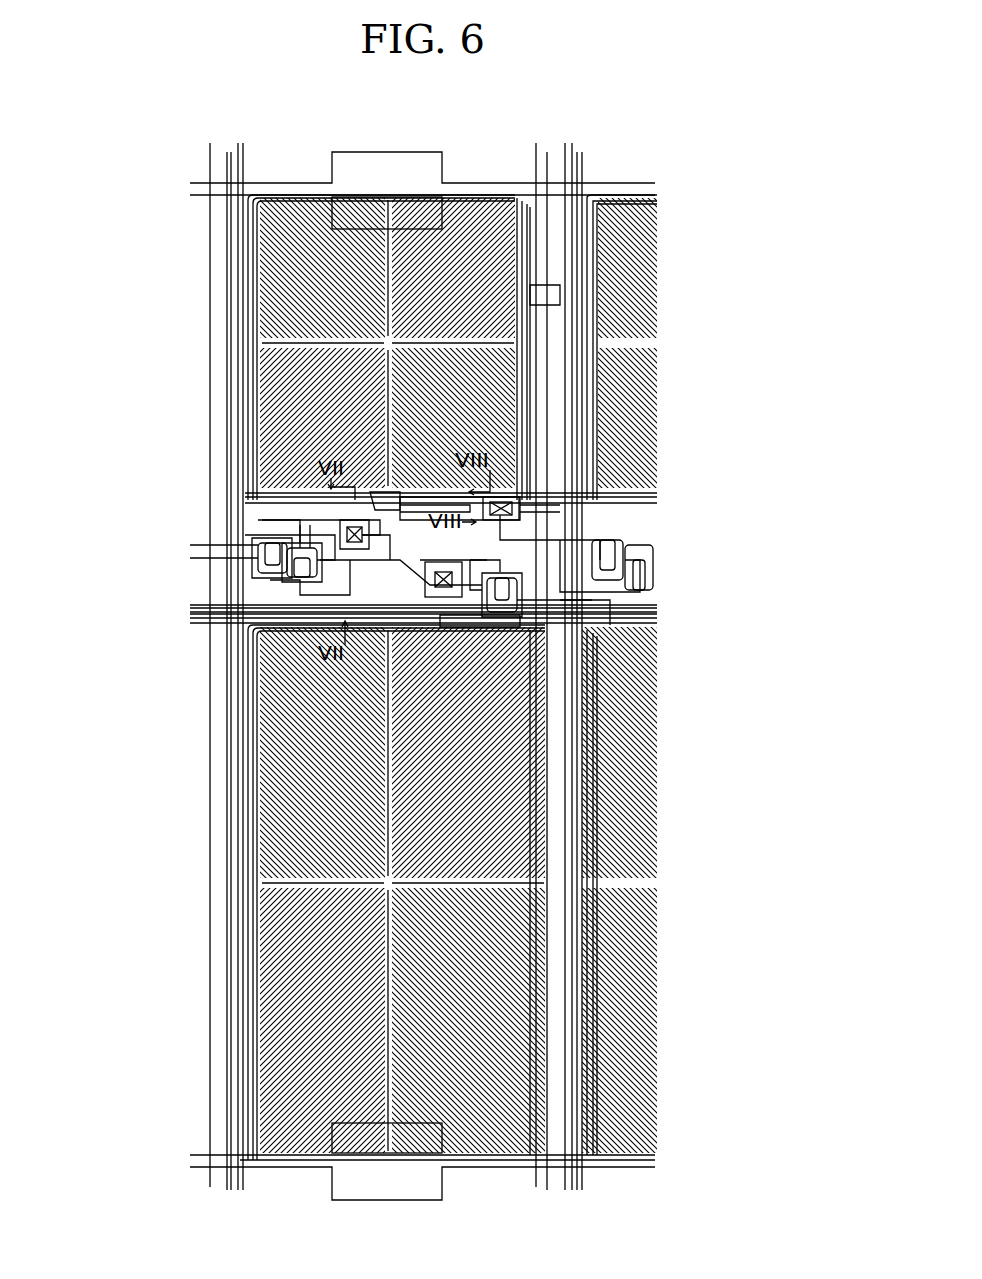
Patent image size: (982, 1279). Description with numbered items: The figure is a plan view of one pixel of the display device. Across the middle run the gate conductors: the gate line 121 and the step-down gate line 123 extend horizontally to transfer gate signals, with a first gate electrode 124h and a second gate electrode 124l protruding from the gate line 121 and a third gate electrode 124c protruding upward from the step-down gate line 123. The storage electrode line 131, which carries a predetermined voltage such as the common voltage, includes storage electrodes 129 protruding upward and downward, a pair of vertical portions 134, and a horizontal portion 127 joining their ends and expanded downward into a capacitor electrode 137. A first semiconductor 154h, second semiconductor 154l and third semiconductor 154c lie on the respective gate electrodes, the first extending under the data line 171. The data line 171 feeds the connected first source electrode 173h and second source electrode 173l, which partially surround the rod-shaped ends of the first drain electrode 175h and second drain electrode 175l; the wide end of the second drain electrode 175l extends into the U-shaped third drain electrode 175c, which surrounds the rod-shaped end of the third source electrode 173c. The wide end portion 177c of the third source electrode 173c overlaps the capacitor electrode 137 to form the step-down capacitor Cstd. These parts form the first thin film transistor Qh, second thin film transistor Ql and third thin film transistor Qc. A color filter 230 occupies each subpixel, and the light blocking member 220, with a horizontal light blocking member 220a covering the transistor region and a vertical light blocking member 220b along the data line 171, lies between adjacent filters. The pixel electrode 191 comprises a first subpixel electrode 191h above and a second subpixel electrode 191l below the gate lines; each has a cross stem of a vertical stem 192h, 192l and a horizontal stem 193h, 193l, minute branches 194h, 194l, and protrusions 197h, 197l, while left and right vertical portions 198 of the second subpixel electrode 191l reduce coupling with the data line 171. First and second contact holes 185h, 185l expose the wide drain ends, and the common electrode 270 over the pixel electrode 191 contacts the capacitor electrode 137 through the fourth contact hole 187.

The gate line 121 is at (600, 556).
The step-down gate line 123 is at (590, 625).
The first gate electrode 124h is at (300, 600).
The second gate electrode 124l is at (305, 530).
The third gate electrode 124c is at (560, 592).
The horizontal portion 127 is at (243, 520).
The storage electrode 129 is at (422, 152).
The storage electrode line 131 is at (483, 183).
The vertical portion 134 is at (555, 295).
The capacitor electrode 137 is at (530, 515).
The first semiconductor 154h is at (258, 575).
The second semiconductor 154l is at (382, 575).
The third semiconductor 154c is at (500, 615).
The data line 171 is at (240, 228).
The first source electrode 173h is at (265, 590).
The second source electrode 173l is at (275, 545).
The third source electrode 173c is at (560, 570).
The first drain electrode 175h is at (262, 548).
The second drain electrode 175l is at (360, 562).
The third drain electrode 175c is at (500, 590).
The wide end portion 177c is at (505, 415).
The first contact hole 185h is at (355, 565).
The second contact hole 185l is at (520, 590).
The fourth contact hole 187 is at (470, 492).
The pixel electrode 191 is at (414, 634).
The first subpixel electrode 191h is at (399, 609).
The second subpixel electrode 191l is at (410, 883).
The vertical stem 192h is at (392, 215).
The vertical stem 192l is at (390, 850).
The horizontal stem 193h is at (265, 343).
The horizontal stem 193l is at (260, 885).
The minute branches 194h is at (288, 283).
The minute branches 194l is at (260, 830).
The protrusion 197h is at (375, 520).
The protrusion 197l is at (460, 600).
The left and right vertical portions 198 is at (450, 505).
The light blocking member 220 is at (433, 677).
The horizontal light blocking member 220a is at (250, 495).
The vertical light blocking member 220b is at (530, 385).
The color filter 230 is at (227, 258).
The common electrode 270 is at (660, 632).
The step-down capacitor Cstd is at (485, 430).
The first thin film transistor Qh is at (262, 560).
The second thin film transistor Ql is at (292, 560).
The third thin film transistor Qc is at (500, 600).